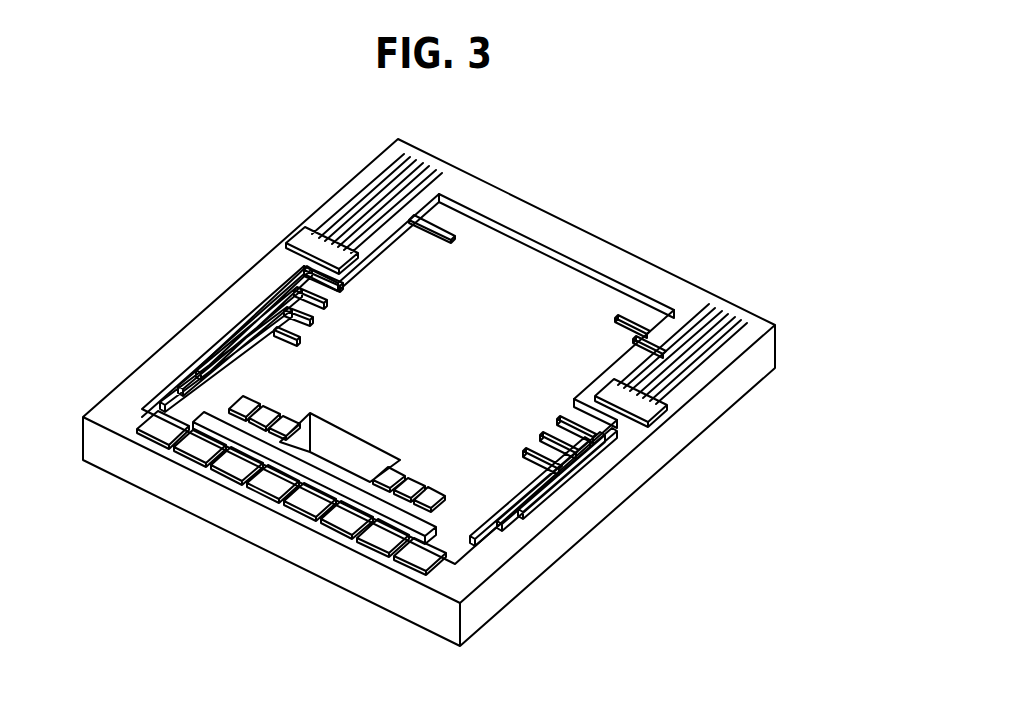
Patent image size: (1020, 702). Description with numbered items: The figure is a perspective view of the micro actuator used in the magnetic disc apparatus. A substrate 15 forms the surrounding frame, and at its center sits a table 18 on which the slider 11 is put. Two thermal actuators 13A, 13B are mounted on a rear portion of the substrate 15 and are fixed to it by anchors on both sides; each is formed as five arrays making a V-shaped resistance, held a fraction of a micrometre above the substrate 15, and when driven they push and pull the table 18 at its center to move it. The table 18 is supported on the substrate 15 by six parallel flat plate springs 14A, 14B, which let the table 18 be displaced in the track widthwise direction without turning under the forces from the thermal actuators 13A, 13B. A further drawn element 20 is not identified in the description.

The slider 11 is at (483, 243).
The thermal actuator 13A is at (318, 243).
The thermal actuator 13B is at (648, 410).
The parallel flat plate spring 14A is at (200, 363).
The parallel flat plate spring 14B is at (535, 478).
The substrate 15 is at (453, 563).
The table 18 is at (565, 310).
The movable element 20 is at (348, 450).